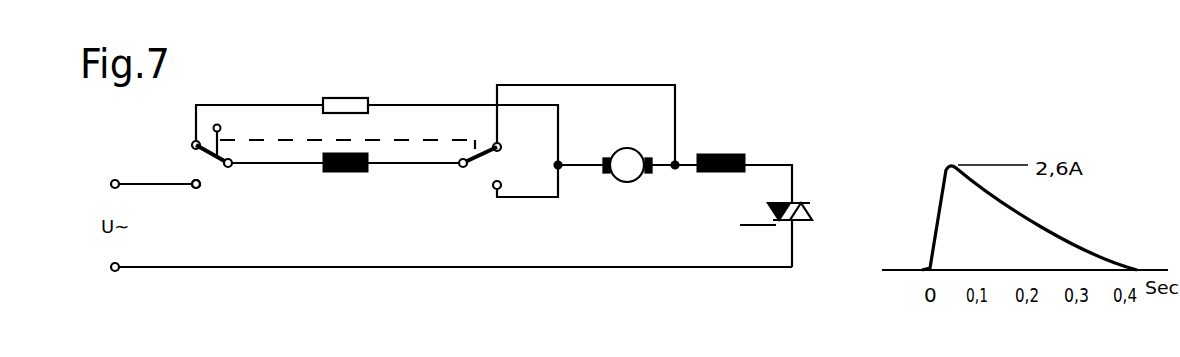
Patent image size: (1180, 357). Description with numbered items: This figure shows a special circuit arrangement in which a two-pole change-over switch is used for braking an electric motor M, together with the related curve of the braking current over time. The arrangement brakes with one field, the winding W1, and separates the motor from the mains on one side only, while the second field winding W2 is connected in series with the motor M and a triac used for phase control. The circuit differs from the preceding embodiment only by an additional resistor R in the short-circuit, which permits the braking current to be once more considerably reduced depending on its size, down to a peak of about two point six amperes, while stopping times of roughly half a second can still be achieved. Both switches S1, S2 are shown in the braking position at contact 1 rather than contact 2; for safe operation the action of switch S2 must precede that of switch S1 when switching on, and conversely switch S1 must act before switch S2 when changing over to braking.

The resistor R is at (340, 98).
The winding W1 is at (340, 172).
The winding W2 is at (720, 172).
The switch S1 is at (207, 157).
The switch S2 is at (482, 158).
The motor M is at (627, 165).
The switch contact position 1 is at (348, 142).
The switch contact position 2 is at (352, 191).